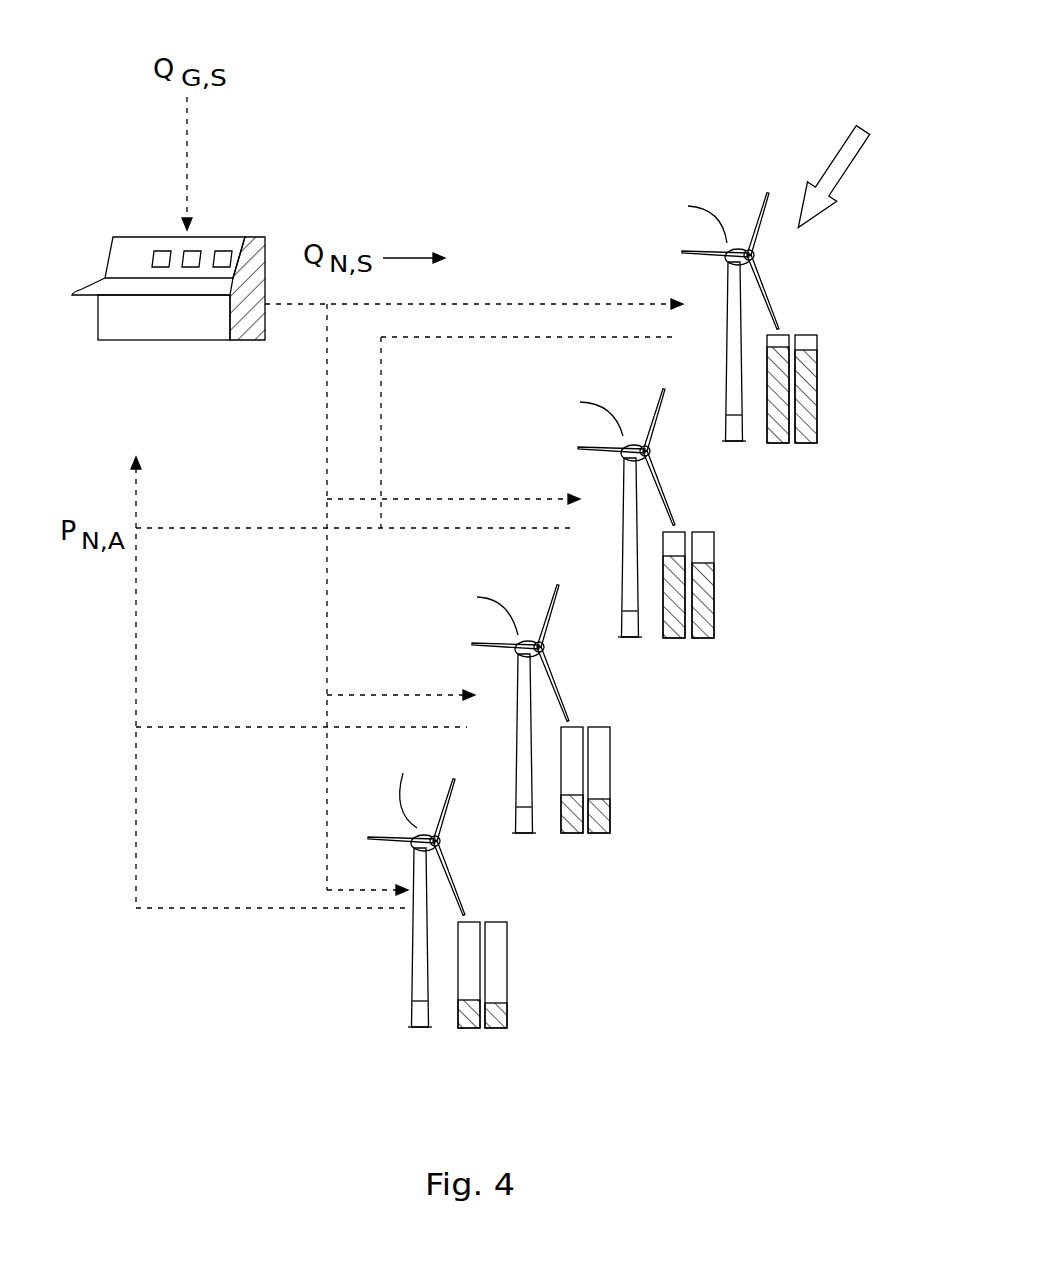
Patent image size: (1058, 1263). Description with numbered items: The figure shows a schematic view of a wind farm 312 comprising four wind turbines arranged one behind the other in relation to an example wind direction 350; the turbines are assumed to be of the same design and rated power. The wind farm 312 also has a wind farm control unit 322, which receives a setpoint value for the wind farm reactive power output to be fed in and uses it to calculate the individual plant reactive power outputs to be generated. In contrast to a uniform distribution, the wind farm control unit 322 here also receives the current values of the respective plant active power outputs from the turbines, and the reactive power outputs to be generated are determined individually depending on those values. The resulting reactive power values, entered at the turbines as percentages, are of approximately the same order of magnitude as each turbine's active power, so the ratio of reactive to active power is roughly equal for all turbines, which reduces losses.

The wind farm control unit 322 is at (128, 208).
The wind direction 350 is at (833, 162).
The wind farm 312 is at (805, 887).